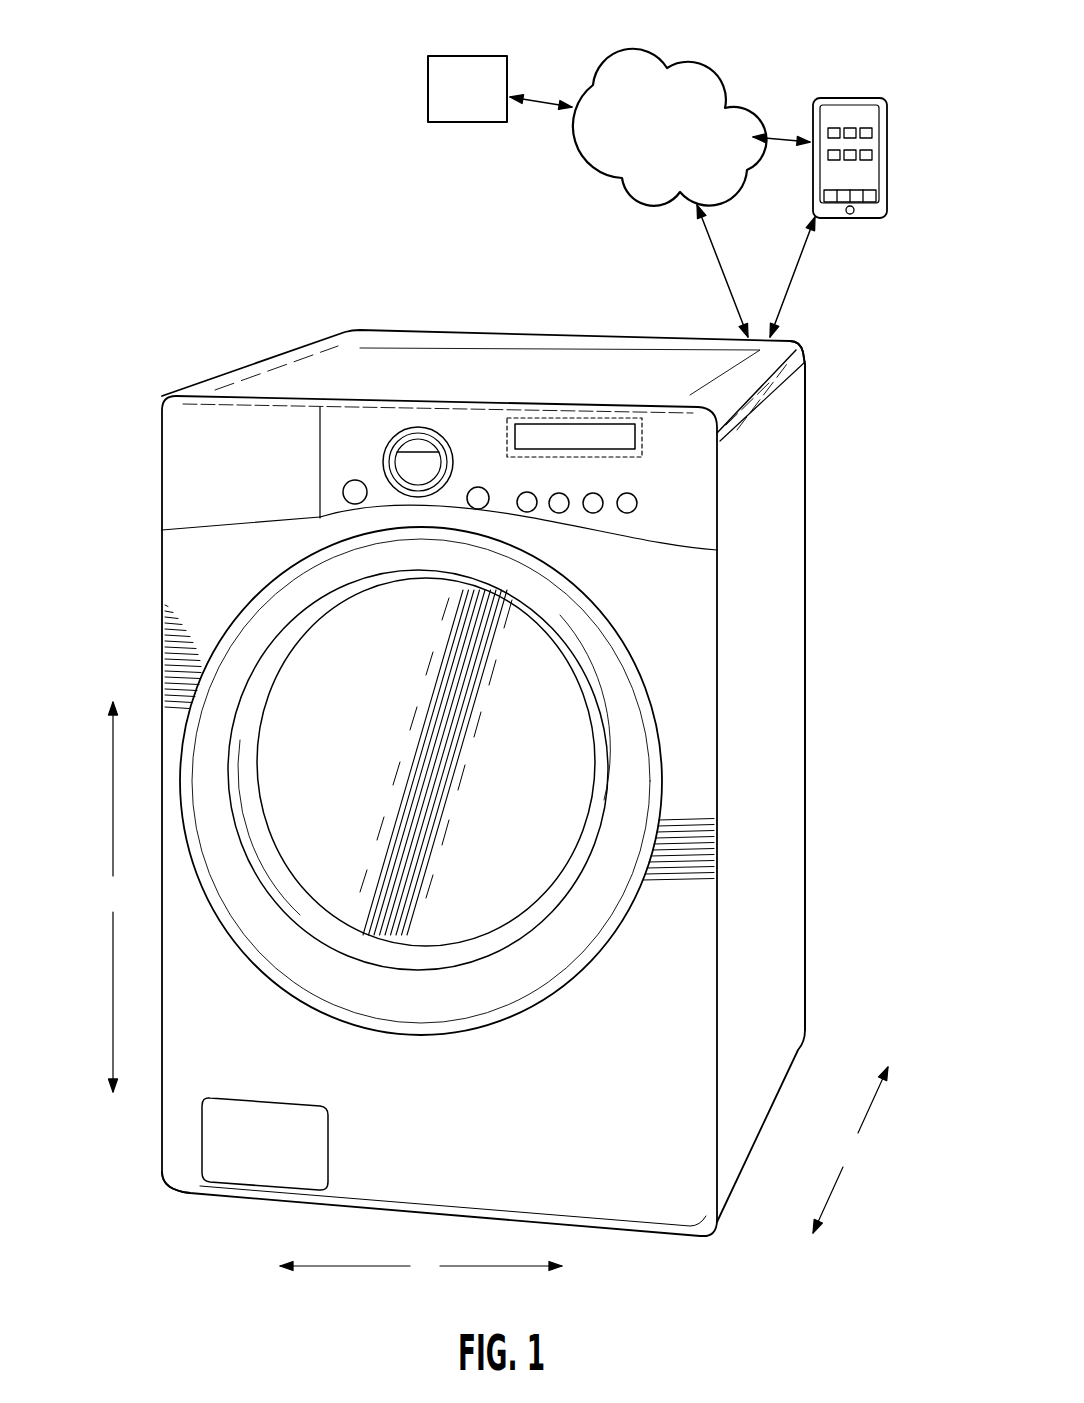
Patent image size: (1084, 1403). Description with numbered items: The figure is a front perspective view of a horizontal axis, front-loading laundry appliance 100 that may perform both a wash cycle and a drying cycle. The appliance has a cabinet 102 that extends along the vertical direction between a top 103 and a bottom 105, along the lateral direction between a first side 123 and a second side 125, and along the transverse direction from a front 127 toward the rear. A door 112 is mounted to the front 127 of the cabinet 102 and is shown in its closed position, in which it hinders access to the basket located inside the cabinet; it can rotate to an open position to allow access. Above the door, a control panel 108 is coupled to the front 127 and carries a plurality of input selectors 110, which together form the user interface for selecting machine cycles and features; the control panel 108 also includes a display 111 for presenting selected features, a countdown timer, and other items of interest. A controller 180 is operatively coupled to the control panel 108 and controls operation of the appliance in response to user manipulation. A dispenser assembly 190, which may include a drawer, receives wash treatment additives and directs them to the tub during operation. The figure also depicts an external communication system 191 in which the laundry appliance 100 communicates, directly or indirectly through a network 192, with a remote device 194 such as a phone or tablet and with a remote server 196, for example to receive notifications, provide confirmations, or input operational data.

The laundry appliance 100 is at (480, 769).
The cabinet 102 is at (770, 636).
The top 103 is at (820, 343).
The bottom 105 is at (713, 1238).
The control panel 108 is at (483, 437).
The input selectors 110 is at (410, 450).
The display 111 is at (585, 433).
The door 112 is at (364, 736).
The first side 123 is at (162, 652).
The second side 125 is at (788, 852).
The front 127 is at (182, 592).
The controller 180 is at (565, 417).
The dispenser assembly 190 is at (176, 424).
The external communication system 191 is at (679, 168).
The network 192 is at (671, 149).
The remote device 194 is at (887, 172).
The remote server 196 is at (484, 104).